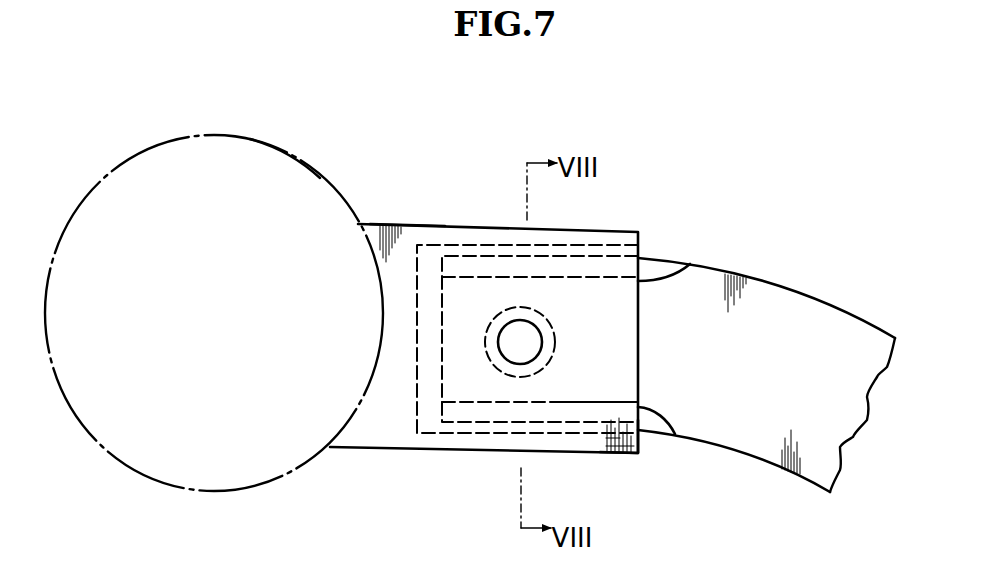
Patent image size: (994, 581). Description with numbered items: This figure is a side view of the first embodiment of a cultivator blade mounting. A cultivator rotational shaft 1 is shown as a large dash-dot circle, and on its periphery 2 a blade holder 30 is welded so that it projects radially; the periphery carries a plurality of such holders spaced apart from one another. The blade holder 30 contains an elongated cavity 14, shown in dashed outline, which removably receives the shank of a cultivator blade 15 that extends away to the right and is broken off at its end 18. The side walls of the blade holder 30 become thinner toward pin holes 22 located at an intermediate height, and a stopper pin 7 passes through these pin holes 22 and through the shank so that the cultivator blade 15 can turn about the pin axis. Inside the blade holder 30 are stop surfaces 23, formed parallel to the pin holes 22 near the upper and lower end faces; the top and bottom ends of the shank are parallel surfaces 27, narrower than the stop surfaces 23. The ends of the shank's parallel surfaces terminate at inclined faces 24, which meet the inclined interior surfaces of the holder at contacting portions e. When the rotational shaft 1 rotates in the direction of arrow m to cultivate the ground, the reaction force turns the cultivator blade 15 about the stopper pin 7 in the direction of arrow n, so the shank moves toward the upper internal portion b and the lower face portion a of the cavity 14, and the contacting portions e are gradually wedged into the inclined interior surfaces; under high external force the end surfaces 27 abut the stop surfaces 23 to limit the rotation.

The cultivator rotational shaft 1 is at (247, 138).
The periphery 2 is at (322, 178).
The stopper pin 7 is at (541, 333).
The cavity 14 is at (462, 434).
The cultivator blade 15 is at (810, 291).
The arm end portion 18 is at (873, 347).
The pin holes 22 is at (507, 355).
The stop surfaces 23 is at (503, 438).
The inclined face 24 is at (667, 257).
The parallel surfaces 27 is at (582, 438).
The blade holder 30 is at (497, 226).
The lower face portion a is at (620, 460).
The upper internal portion b is at (437, 219).
The contacting portions e is at (572, 277).
The rotating direction arrow m is at (355, 372).
The blade turning direction arrow n is at (898, 410).